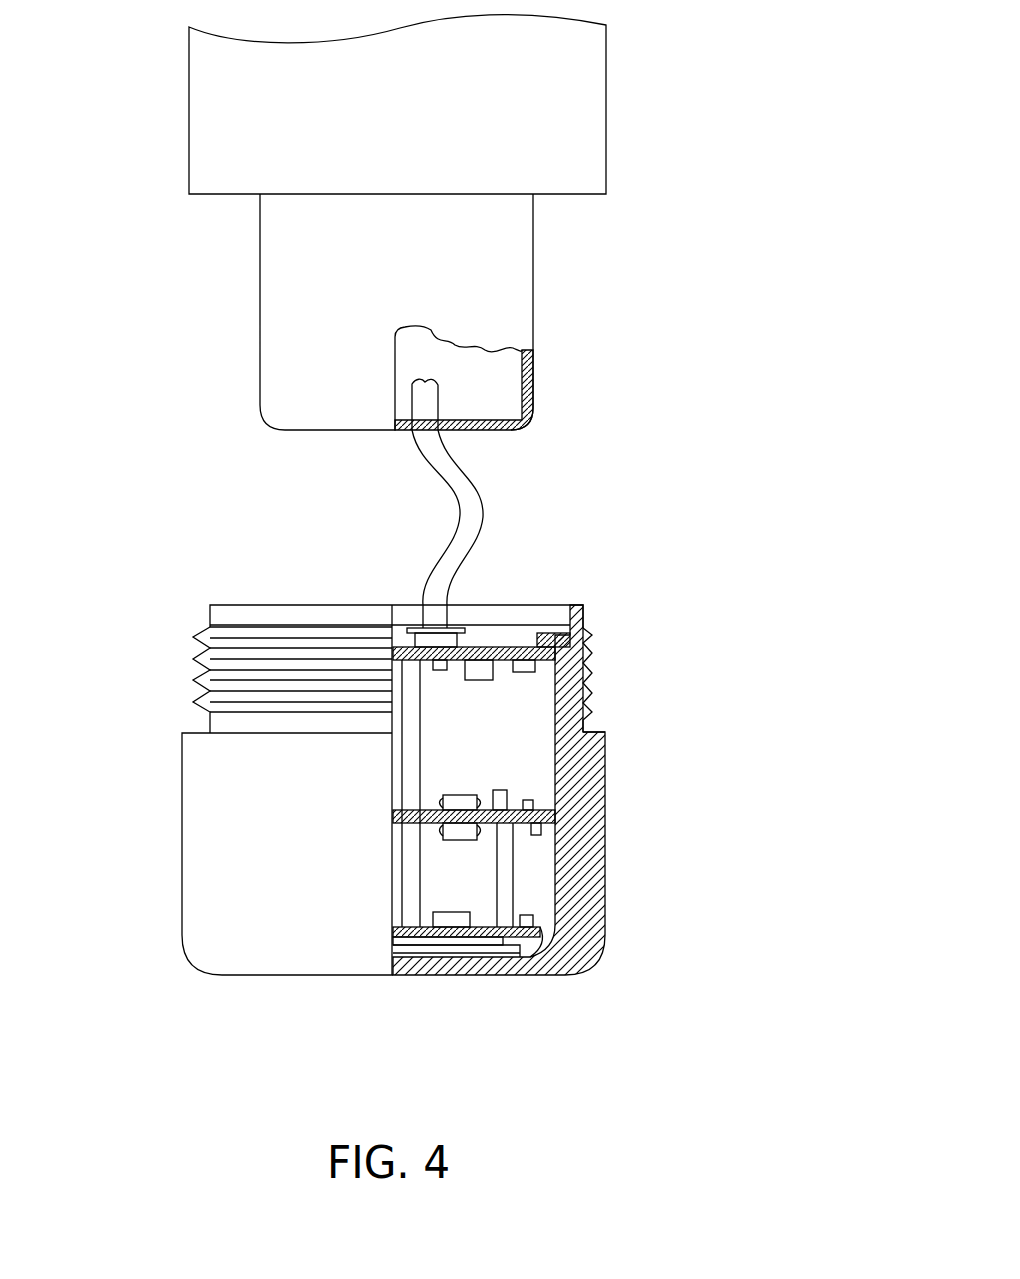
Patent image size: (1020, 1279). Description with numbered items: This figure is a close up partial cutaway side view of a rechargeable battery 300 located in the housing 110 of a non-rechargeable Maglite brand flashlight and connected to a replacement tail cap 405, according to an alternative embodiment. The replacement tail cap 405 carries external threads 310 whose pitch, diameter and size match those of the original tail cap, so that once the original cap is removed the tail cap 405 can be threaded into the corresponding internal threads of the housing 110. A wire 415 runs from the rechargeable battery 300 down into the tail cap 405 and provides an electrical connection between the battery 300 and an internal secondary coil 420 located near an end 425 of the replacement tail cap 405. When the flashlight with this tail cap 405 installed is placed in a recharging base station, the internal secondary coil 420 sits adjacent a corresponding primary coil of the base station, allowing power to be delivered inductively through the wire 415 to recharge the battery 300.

The housing 110 is at (567, 152).
The rechargeable battery 300 is at (514, 264).
The external threads 310 is at (195, 681).
The replacement tail cap 405 is at (210, 860).
The wire 415 is at (477, 510).
The internal secondary coil 420 is at (448, 942).
The end 425 is at (278, 992).